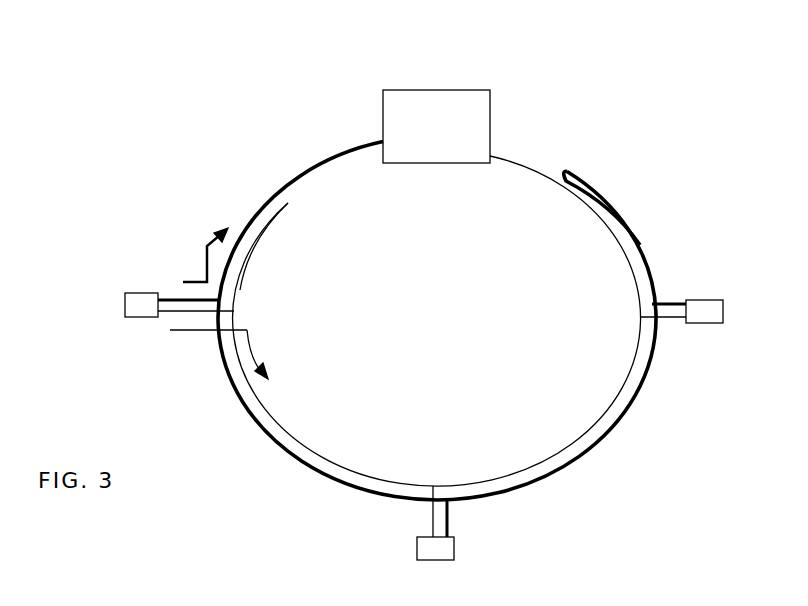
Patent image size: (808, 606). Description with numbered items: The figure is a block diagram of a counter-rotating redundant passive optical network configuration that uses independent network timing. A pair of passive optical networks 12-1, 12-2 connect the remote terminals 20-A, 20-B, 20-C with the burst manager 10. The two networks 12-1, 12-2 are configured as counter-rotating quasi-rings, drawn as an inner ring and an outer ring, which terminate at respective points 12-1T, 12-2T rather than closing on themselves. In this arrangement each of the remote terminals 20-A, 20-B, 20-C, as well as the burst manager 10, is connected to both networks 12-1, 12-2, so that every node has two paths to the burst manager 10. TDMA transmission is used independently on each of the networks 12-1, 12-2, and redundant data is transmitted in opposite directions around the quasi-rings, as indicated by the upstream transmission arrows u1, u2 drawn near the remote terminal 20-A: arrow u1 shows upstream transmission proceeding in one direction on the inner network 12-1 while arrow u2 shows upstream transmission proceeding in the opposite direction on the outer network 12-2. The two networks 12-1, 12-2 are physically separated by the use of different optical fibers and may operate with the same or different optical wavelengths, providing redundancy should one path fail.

The burst manager 10 is at (455, 88).
The passive optical network 12-1 is at (518, 165).
The passive optical network 12-2 is at (295, 183).
The termination point 12-1T is at (288, 205).
The termination point 12-2T is at (575, 170).
The remote terminal 20-A is at (125, 305).
The remote terminal 20-B is at (454, 548).
The remote terminal 20-C is at (708, 323).
The upstream transmission arrow u1 is at (247, 330).
The upstream transmission arrow u2 is at (212, 253).